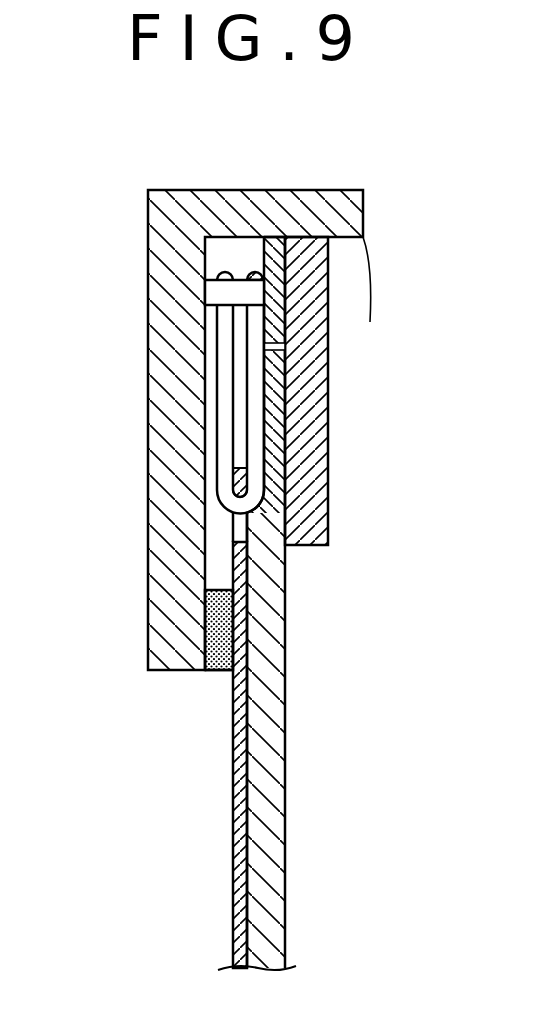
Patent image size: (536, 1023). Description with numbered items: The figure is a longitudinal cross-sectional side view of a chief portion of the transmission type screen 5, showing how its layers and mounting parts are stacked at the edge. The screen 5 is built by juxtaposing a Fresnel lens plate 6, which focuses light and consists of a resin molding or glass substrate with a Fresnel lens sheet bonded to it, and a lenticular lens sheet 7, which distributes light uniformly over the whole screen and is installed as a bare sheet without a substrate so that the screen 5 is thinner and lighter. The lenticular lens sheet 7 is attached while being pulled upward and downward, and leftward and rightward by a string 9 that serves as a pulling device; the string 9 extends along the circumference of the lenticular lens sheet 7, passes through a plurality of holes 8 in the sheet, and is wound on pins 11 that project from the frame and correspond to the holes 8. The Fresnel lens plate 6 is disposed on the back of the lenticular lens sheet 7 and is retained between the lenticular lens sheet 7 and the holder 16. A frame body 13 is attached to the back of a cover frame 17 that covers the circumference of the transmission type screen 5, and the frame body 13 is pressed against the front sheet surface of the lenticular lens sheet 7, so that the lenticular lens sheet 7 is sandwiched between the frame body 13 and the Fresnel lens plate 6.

The transmission type screen 5 is at (224, 843).
The Fresnel lens plate 6 is at (286, 699).
The lenticular lens sheet 7 is at (233, 743).
The holes 8 is at (240, 532).
The string 9 is at (228, 383).
The pins 11 is at (215, 295).
The frame body 13 is at (205, 623).
The holder 16 is at (313, 416).
The cover frame 17 is at (149, 462).